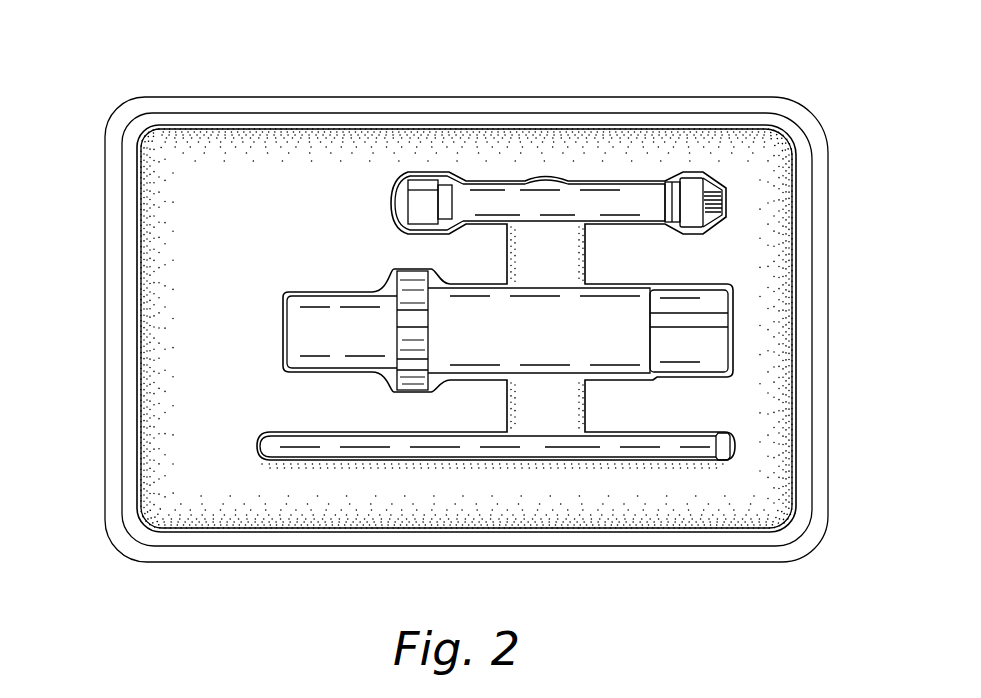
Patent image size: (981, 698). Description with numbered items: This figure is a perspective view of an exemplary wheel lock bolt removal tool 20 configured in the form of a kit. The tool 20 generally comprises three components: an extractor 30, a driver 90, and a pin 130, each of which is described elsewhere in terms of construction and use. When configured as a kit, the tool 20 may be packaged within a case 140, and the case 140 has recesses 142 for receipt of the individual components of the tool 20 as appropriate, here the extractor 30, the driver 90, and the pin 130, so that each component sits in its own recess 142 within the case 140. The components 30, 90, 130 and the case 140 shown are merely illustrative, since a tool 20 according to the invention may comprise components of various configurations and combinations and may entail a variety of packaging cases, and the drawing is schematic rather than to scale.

The wheel lock bolt removal tool 20 is at (103, 82).
The extractor 30 is at (628, 300).
The driver 90 is at (547, 181).
The pin 130 is at (551, 456).
The case 140 is at (103, 551).
The recesses 142 is at (552, 413).